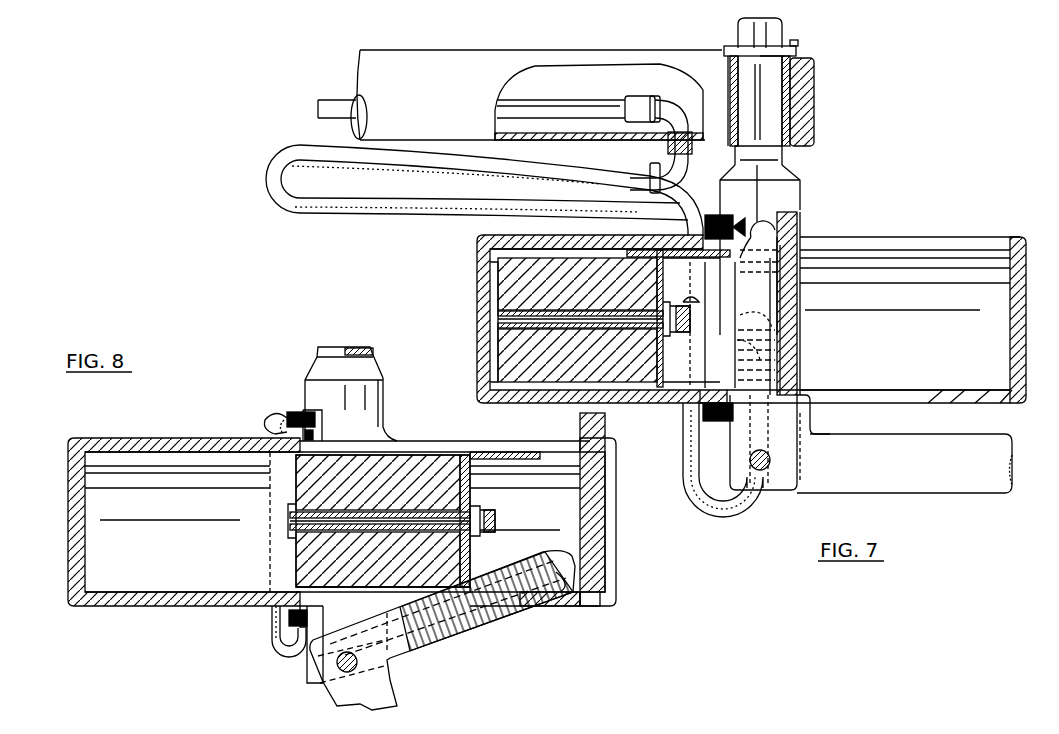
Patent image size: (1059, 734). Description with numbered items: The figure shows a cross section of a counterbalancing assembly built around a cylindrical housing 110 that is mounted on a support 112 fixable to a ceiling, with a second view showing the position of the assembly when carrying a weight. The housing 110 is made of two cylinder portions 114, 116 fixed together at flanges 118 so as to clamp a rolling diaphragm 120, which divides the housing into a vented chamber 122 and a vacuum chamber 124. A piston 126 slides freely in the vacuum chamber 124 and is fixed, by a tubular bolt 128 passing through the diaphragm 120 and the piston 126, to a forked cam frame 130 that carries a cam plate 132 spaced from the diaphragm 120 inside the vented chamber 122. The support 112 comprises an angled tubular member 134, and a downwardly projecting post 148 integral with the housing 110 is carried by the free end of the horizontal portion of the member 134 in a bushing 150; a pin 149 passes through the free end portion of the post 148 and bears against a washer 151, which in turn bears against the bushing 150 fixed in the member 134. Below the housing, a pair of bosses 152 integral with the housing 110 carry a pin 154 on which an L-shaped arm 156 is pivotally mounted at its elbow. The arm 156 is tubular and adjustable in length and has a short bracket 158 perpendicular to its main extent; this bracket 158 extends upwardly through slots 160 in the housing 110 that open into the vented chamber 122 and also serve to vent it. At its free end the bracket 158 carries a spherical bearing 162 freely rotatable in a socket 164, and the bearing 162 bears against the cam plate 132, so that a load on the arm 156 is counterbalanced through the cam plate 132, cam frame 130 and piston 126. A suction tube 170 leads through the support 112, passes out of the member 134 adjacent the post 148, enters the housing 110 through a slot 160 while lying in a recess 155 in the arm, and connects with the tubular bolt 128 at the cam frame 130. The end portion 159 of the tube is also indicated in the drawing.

In FIG. 7, the cylindrical housing 110 is at (884, 236).
In FIG. 8, the cylindrical housing 110 is at (118, 432).
In FIG. 7, the support 112 is at (617, 52).
In FIG. 7, the cylinder portion 114 is at (944, 238).
In FIG. 7, the cylinder portion 116 is at (588, 238).
In FIG. 8, the cylinder portion 116 is at (160, 438).
In FIG. 7, the flanges 118 is at (700, 430).
In FIG. 8, the flanges 118 is at (292, 412).
In FIG. 7, the rolling diaphragm 120 is at (655, 402).
In FIG. 8, the rolling diaphragm 120 is at (400, 452).
In FIG. 7, the vented chamber 122 is at (992, 278).
In FIG. 8, the vented chamber 122 is at (548, 480).
In FIG. 7, the vacuum chamber 124 is at (524, 240).
In FIG. 8, the vacuum chamber 124 is at (172, 580).
In FIG. 7, the piston 126 is at (505, 356).
In FIG. 8, the piston 126 is at (300, 484).
In FIG. 7, the tubular bolt 128 is at (510, 300).
In FIG. 8, the tubular bolt 128 is at (302, 542).
In FIG. 7, the forked cam frame 130 is at (690, 246).
In FIG. 8, the forked cam frame 130 is at (496, 452).
In FIG. 7, the cam plate 132 is at (795, 338).
In FIG. 8, the cam plate 132 is at (598, 492).
In FIG. 7, the angled tubular member 134 is at (446, 60).
In FIG. 7, the post 148 is at (803, 196).
In FIG. 8, the post 148 is at (318, 366).
In FIG. 7, the pin 149 is at (790, 44).
In FIG. 7, the bushing 150 is at (800, 101).
In FIG. 7, the washer 151 is at (800, 52).
In FIG. 7, the bosses 152 is at (812, 428).
In FIG. 8, the bosses 152 is at (310, 670).
In FIG. 7, the pin 154 is at (768, 470).
In FIG. 8, the pin 154 is at (358, 664).
In FIG. 8, the recess 155 is at (412, 650).
In FIG. 7, the L-shaped arm 156 is at (945, 497).
In FIG. 8, the L-shaped arm 156 is at (388, 697).
In FIG. 7, the bracket 158 is at (790, 297).
In FIG. 8, the bracket 158 is at (482, 612).
In FIG. 7, the end portion 159 is at (1006, 460).
In FIG. 7, the slots 160 is at (844, 240).
In FIG. 7, the spherical bearing 162 is at (757, 220).
In FIG. 8, the spherical bearing 162 is at (575, 584).
In FIG. 7, the socket 164 is at (758, 250).
In FIG. 7, the suction tube 170 is at (285, 200).
In FIG. 8, the suction tube 170 is at (274, 622).